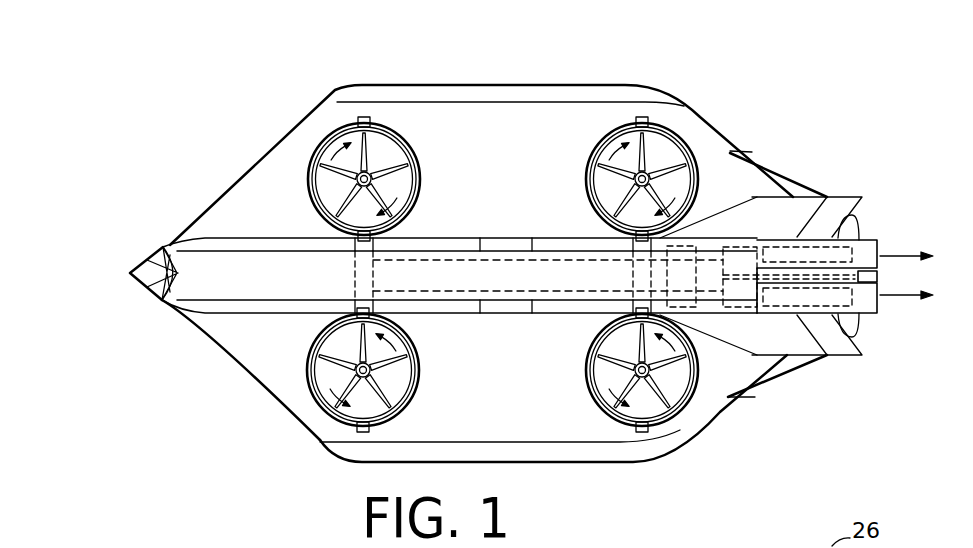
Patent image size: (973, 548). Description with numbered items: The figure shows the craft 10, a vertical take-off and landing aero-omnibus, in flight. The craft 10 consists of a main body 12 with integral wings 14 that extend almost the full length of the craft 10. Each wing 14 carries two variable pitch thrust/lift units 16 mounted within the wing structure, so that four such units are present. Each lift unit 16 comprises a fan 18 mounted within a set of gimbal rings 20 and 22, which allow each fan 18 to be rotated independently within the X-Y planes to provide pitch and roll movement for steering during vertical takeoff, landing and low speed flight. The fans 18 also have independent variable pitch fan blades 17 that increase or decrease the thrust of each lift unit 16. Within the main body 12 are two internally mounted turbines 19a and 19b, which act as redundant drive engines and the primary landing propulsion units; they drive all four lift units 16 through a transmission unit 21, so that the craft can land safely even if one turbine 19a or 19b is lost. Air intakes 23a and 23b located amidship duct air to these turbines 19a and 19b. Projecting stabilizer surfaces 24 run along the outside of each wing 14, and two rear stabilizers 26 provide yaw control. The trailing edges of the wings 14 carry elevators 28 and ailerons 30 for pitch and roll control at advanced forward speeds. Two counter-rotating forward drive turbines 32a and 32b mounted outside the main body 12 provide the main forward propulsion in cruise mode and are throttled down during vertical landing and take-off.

The craft 10 is at (130, 272).
The main body 12 is at (230, 275).
The wing 14 is at (267, 347).
The variable pitch thrust/lift unit 16 is at (465, 256).
The variable pitch fan blade 17 is at (312, 178).
The fan 18 is at (347, 126).
The gimbal ring 20 is at (368, 138).
The gimbal ring 22 is at (393, 133).
The transmission unit 21 is at (697, 242).
The air intake 23a is at (502, 238).
The air intake 23b is at (503, 313).
The projecting stabilizer surface 24 is at (600, 465).
The rear stabilizer 26 is at (827, 198).
The elevator 28 is at (765, 382).
The aileron 30 is at (822, 357).
The turbine 19a is at (770, 260).
The turbine 19b is at (771, 295).
The forward drive turbine 32a is at (880, 238).
The forward drive turbine 32b is at (878, 314).